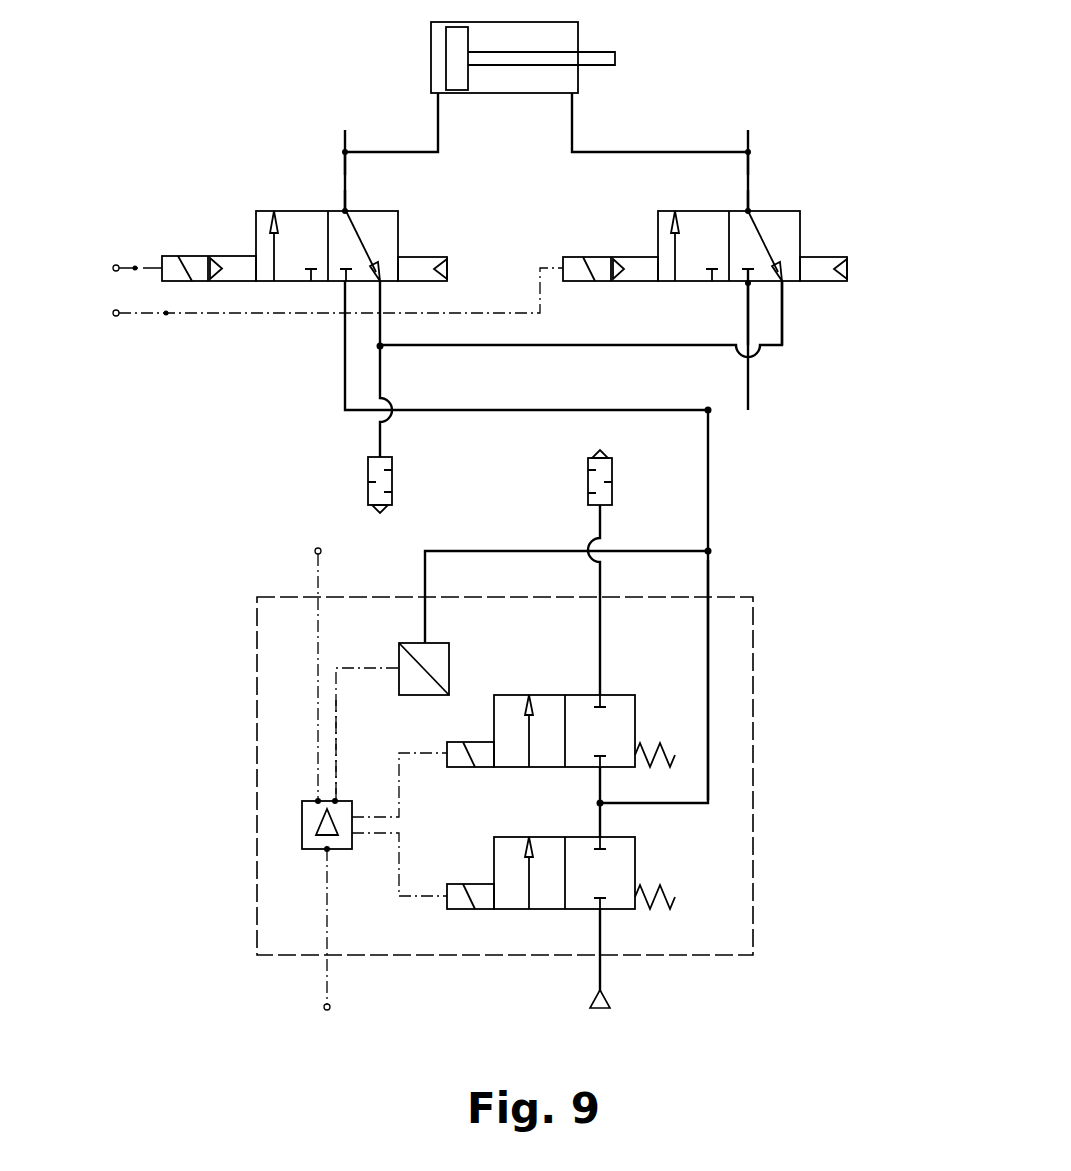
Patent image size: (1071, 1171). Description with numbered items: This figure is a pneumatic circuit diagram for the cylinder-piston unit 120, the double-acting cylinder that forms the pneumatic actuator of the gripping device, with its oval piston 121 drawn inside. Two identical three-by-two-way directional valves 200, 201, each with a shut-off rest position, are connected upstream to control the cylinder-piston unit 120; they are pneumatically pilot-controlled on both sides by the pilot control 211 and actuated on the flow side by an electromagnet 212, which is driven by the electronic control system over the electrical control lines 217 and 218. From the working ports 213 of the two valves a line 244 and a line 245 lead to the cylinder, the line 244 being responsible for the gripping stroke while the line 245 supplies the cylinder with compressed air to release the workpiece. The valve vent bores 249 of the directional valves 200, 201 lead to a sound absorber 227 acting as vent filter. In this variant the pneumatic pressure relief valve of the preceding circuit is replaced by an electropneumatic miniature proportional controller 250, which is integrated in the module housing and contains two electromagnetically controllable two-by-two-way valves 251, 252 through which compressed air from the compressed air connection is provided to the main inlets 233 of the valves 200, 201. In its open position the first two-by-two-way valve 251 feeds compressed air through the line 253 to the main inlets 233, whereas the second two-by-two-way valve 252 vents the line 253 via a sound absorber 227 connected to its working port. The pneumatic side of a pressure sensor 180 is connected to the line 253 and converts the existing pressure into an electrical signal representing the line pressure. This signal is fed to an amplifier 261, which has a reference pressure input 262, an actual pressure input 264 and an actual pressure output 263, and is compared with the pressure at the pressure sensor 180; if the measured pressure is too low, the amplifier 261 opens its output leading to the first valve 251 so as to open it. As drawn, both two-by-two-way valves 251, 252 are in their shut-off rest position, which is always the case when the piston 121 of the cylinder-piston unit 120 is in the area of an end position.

The cylinder-piston unit 120 is at (590, 39).
The piston 121 is at (455, 59).
The compressed air connection 245 is at (345, 152).
The compressed air connection 244 is at (748, 152).
The working ports 213 is at (345, 211).
The 3/2-way valve 201 is at (243, 204).
The electromagnet 212 is at (237, 266).
The pneumatic pilot control 211 is at (172, 260).
The control line 217 is at (135, 268).
The control line 218 is at (166, 313).
The 3/2-way valve 200 is at (812, 203).
The valve vent bore 249 is at (782, 282).
The main inlet 233 is at (748, 283).
The sound absorber 227 is at (377, 469).
The proportional controller 250 is at (762, 909).
The line 253 is at (708, 646).
The pressure sensor 180 is at (390, 666).
The amplifier 261 is at (293, 819).
The actual pressure input 264 is at (318, 801).
The actual pressure output 263 is at (335, 801).
The reference pressure input 262 is at (327, 849).
The second 2/2-way valve 252 is at (650, 710).
The first 2/2-way valve 251 is at (650, 854).